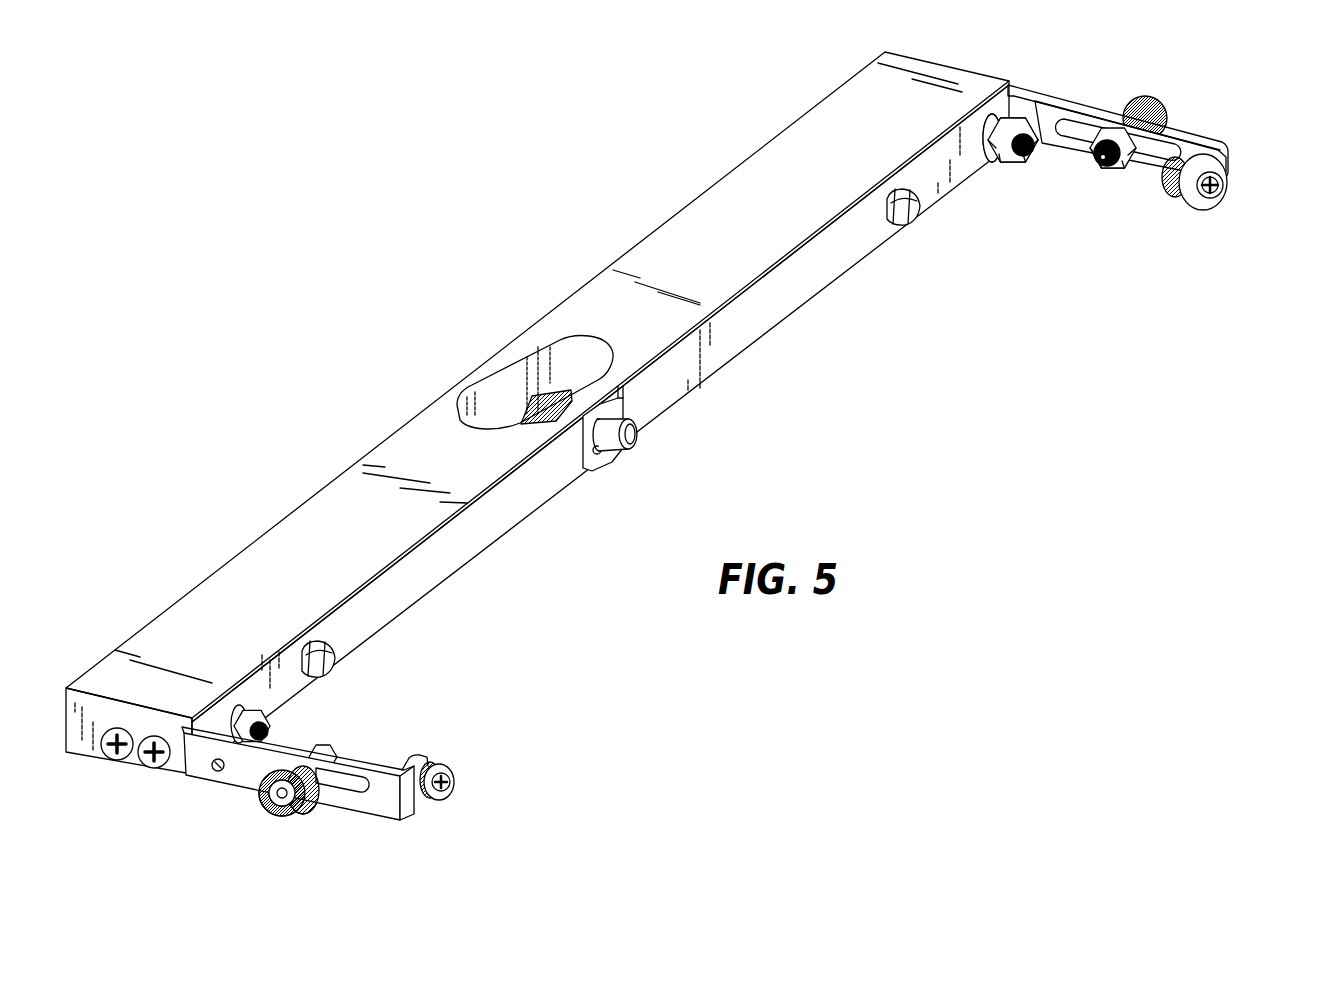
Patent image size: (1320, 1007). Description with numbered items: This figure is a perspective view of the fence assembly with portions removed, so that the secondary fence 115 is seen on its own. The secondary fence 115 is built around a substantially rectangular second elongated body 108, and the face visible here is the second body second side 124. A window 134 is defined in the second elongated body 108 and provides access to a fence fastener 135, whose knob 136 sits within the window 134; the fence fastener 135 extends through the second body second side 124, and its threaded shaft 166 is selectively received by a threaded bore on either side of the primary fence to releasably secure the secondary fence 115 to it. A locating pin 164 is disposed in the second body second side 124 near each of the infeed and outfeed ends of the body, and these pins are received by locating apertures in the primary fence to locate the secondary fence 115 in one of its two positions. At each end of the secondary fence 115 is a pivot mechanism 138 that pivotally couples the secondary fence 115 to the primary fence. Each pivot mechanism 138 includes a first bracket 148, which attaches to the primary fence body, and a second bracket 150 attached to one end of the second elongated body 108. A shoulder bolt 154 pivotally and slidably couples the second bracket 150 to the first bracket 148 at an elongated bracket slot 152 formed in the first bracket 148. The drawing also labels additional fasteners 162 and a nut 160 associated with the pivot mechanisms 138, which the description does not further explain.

The secondary fence 115 is at (306, 406).
The second elongated body 108 is at (688, 203).
The second body second side 124 is at (752, 323).
The window 134 is at (492, 371).
The knob 136 is at (566, 392).
The fence fastener 135 is at (632, 410).
The threaded shaft 166 is at (636, 443).
The locating pin 164 is at (335, 643).
The fastener 162 is at (240, 712).
The nut 160 is at (322, 748).
The shoulder bolt 154 is at (288, 805).
The elongated bracket slot 152 is at (348, 796).
The second bracket 150 is at (243, 768).
The first bracket 148 is at (382, 806).
The pivot mechanism 138 is at (186, 811).